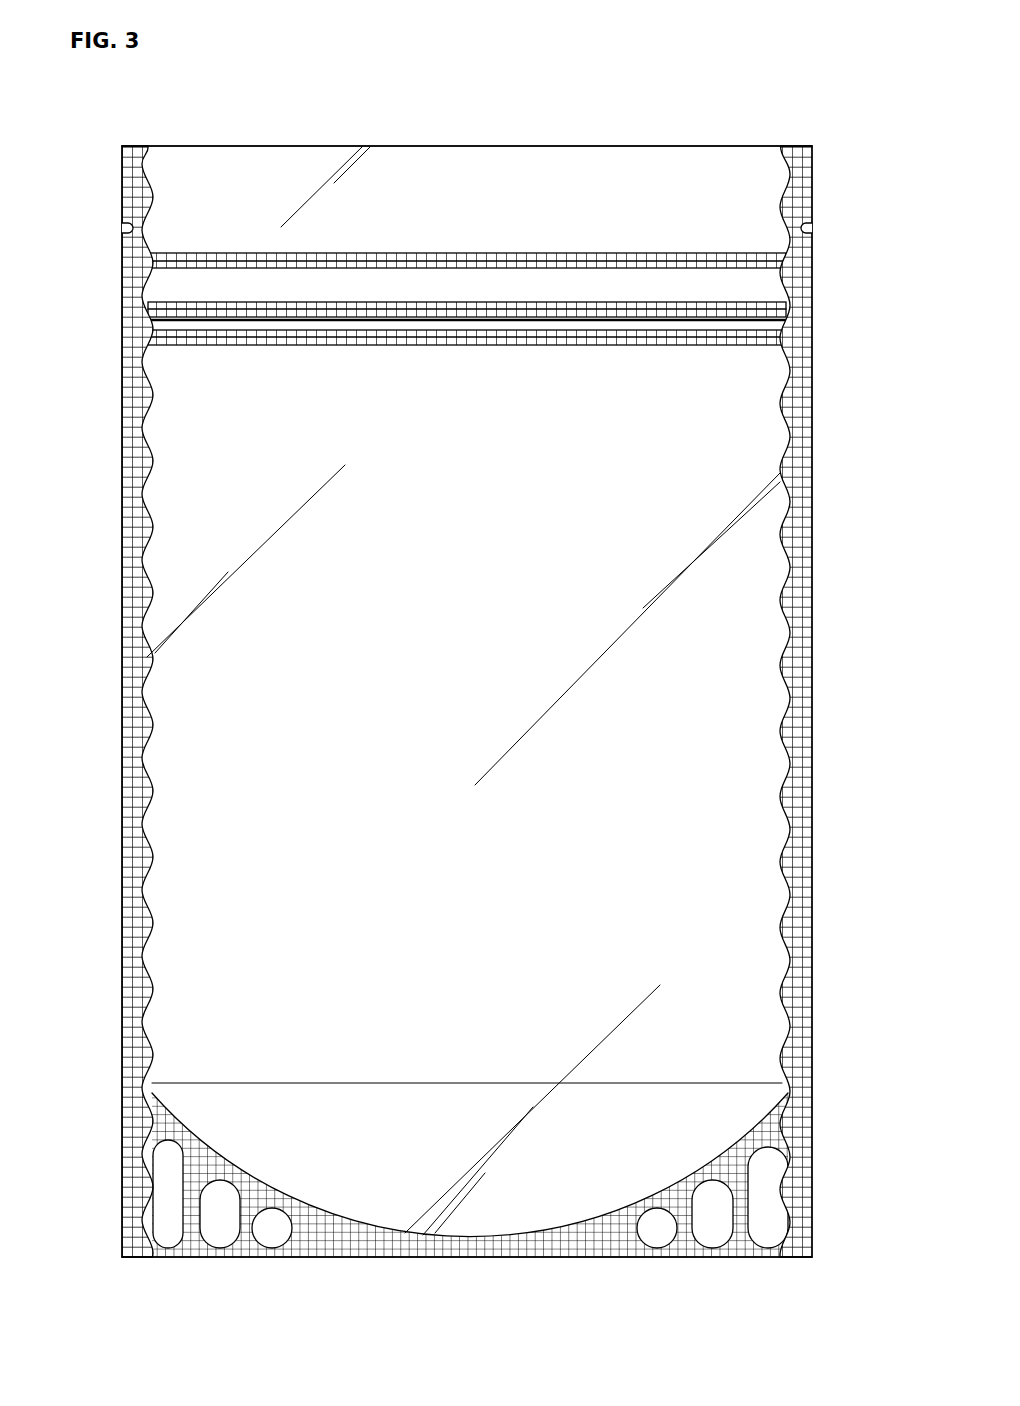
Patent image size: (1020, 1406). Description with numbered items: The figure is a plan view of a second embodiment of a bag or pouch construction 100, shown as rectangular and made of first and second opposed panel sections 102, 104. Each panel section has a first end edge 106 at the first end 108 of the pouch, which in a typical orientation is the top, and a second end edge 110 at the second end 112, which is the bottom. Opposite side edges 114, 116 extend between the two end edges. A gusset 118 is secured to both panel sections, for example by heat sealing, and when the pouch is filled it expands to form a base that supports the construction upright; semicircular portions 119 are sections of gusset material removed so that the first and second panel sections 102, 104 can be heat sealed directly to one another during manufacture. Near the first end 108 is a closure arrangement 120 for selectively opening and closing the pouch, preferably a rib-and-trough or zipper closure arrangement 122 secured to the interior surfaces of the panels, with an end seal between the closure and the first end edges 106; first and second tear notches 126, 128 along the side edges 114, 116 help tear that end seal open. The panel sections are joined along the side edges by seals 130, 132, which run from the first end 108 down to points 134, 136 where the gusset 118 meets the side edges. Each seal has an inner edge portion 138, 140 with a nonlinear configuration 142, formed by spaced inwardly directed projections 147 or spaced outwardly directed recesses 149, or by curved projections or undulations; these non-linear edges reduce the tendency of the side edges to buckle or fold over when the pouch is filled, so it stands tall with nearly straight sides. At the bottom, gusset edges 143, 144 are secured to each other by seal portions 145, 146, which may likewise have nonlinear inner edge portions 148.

The pouch construction 100 is at (642, 82).
The first panel section 102 is at (165, 440).
The second panel section 104 is at (170, 500).
The first end edge 106 is at (690, 147).
The first end 108 is at (449, 115).
The second end edge 110 is at (430, 1260).
The second end 112 is at (505, 1281).
The side edge 114 is at (125, 760).
The side edge 116 is at (810, 722).
The gusset 118 is at (737, 1085).
The semicircular portions 119 is at (128, 1120).
The closure arrangement 120 is at (775, 325).
The zipper closure arrangement 122 is at (182, 327).
The first tear notch 126 is at (126, 222).
The second tear notch 128 is at (808, 227).
The first seal 130 is at (140, 873).
The second seal 132 is at (800, 765).
The point 134 is at (122, 1078).
The point 136 is at (808, 1090).
The inner edge portion 138 is at (204, 728).
The inner edge portion 140 is at (733, 782).
The nonlinear configuration 142 is at (190, 861).
The gusset edge 143 is at (122, 1208).
The gusset edge 144 is at (802, 1197).
The seal portion 145 is at (125, 1187).
The seal portion 146 is at (800, 1217).
The inwardly directed projections 147 is at (152, 598).
The nonlinear inner edge portions 148 is at (142, 1187).
The outwardly directed recesses 149 is at (145, 912).